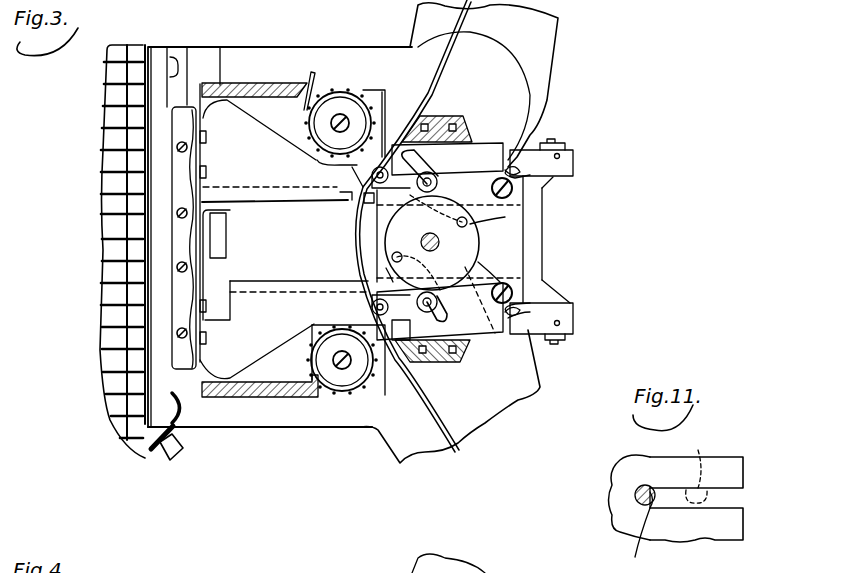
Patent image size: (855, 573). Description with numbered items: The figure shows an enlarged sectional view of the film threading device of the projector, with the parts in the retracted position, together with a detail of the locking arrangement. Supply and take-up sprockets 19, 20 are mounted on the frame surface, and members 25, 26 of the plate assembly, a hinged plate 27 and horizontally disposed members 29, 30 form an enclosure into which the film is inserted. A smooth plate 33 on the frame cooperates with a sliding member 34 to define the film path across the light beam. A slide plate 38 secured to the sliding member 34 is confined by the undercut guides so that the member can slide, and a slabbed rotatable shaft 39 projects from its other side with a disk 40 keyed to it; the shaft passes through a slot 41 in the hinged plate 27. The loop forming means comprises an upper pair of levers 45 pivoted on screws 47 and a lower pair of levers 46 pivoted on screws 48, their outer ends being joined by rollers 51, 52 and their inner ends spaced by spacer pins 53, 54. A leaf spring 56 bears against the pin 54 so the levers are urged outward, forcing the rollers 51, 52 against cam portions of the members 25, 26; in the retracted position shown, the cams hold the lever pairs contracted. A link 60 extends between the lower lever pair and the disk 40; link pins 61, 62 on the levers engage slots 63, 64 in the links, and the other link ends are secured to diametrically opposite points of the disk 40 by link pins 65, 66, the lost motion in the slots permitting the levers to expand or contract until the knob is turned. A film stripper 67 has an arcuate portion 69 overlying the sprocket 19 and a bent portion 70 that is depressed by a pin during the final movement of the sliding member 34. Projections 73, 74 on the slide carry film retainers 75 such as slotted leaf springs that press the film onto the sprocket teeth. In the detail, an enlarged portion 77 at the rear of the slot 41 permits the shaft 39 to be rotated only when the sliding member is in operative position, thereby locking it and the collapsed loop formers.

In FIG. 3, the supply sprocket 19 is at (348, 107).
In FIG. 3, the take-up sprocket 20 is at (338, 380).
In FIG. 3, the member 25 is at (263, 103).
In FIG. 3, the member 26 is at (277, 372).
In FIG. 11, the hinged plate 27 is at (725, 467).
In FIG. 3, the horizontally disposed member 29 is at (465, 120).
In FIG. 3, the horizontally disposed member 30 is at (448, 382).
In FIG. 3, the smooth plate 33 is at (200, 156).
In FIG. 3, the sliding member 34 is at (512, 258).
In FIG. 3, the slide plate 38 is at (533, 279).
In FIG. 3, the rotatable shaft 39 is at (428, 234).
In FIG. 11, the rotatable shaft 39 is at (648, 487).
In FIG. 3, the disk 40 is at (462, 269).
In FIG. 11, the slot 41 is at (725, 498).
In FIG. 3, the pair of levers 45 is at (450, 181).
In FIG. 3, the pair of levers 46 is at (503, 273).
In FIG. 3, the screws 47 is at (516, 191).
In FIG. 3, the screws 48 is at (519, 297).
In FIG. 3, the roller 51 is at (350, 170).
In FIG. 3, the roller 52 is at (366, 303).
In FIG. 3, the spacer pin 53 is at (505, 217).
In FIG. 3, the spacer pin 54 is at (482, 305).
In FIG. 3, the leaf spring 56 is at (500, 262).
In FIG. 3, the link 60 is at (385, 272).
In FIG. 3, the link pin 61 is at (414, 166).
In FIG. 3, the link pin 62 is at (371, 363).
In FIG. 3, the slot 63 is at (445, 123).
In FIG. 3, the slot 64 is at (440, 318).
In FIG. 3, the link pin 65 is at (392, 254).
In FIG. 3, the link pin 66 is at (467, 218).
In FIG. 3, the film stripper 67 is at (383, 98).
In FIG. 3, the portion 69 is at (347, 196).
In FIG. 3, the portion 70 is at (390, 128).
In FIG. 3, the projection 73 is at (565, 163).
In FIG. 3, the projection 74 is at (568, 323).
In FIG. 3, the film retainer 75 is at (525, 160).
In FIG. 11, the enlarged portion 77 is at (643, 532).